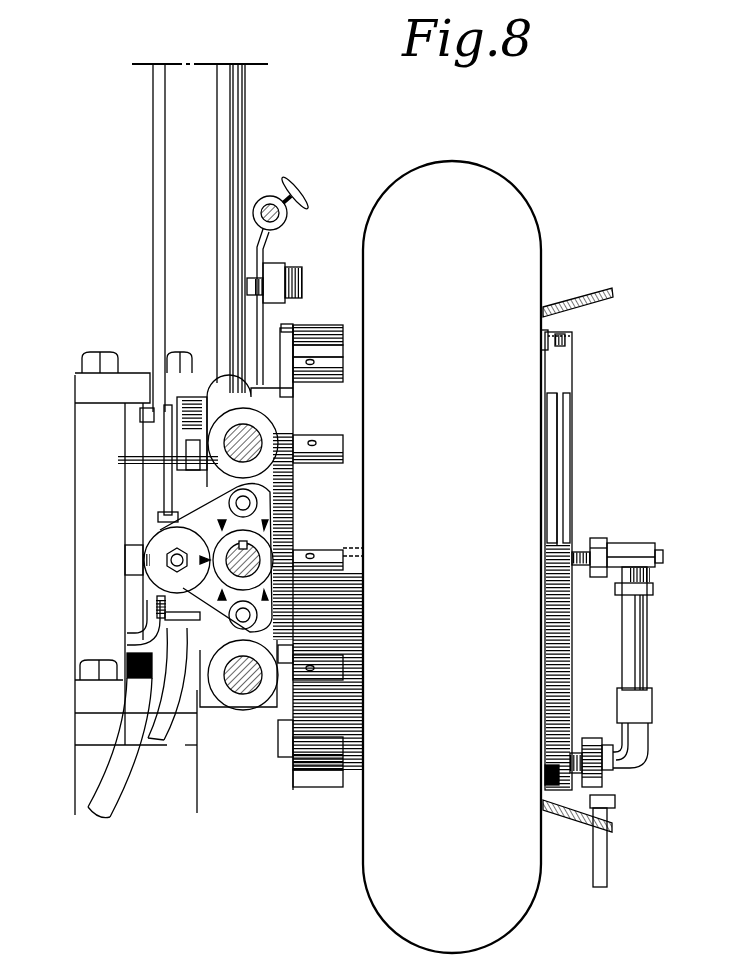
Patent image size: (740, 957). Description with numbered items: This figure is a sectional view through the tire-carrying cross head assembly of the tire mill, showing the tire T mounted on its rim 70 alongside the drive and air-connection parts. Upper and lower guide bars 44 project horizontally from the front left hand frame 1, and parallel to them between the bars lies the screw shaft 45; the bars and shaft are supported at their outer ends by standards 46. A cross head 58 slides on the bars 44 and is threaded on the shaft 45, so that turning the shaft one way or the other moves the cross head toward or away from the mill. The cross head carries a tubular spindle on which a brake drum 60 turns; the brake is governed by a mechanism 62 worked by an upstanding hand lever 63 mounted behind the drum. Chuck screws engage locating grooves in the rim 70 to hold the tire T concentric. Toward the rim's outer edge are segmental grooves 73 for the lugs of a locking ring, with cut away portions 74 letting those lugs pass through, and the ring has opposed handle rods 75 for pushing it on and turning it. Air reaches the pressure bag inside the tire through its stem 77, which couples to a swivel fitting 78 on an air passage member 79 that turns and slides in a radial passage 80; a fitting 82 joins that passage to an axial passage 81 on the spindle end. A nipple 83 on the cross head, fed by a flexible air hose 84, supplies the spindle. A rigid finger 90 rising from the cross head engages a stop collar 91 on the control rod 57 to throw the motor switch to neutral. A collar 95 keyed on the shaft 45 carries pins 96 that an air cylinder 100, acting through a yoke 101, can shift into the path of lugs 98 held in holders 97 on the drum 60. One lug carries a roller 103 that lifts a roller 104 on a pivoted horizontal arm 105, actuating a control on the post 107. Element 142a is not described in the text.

The tire T is at (518, 246).
The front left hand frame 1 is at (88, 728).
The guide bars 44 is at (258, 447).
The screw shaft 45 is at (258, 562).
The standards 46 is at (155, 489).
The control rod 57 is at (268, 205).
The cross head 58 is at (330, 601).
The brake drum 60 is at (370, 402).
The brake mechanism 62 is at (172, 460).
The hand lever 63 is at (158, 270).
The rim 70 is at (555, 376).
The segmental grooves 73 is at (556, 456).
The cut away portions 74 is at (563, 526).
The handle rods 75 is at (570, 300).
The air connecting stem 77 is at (573, 756).
The fitting 78 is at (615, 776).
The air passage member 79 is at (648, 750).
The radial passage 80 is at (640, 631).
The axial passage 81 is at (581, 568).
The fitting 82 is at (620, 548).
The nipple 83 is at (152, 616).
The flexible air hose 84 is at (112, 779).
The rigid finger 90 is at (252, 250).
The stop collar 91 is at (300, 197).
The collar 95 is at (332, 560).
The pins 96 is at (258, 521).
The holders 97 is at (336, 361).
The lugs 98 is at (290, 383).
The air cylinder 100 is at (160, 544).
The yoke 101 is at (178, 532).
The roller 103 is at (293, 327).
The roller 104 is at (300, 278).
The horizontal arm 105 is at (278, 268).
The post 107 is at (245, 118).
The hose 142a is at (156, 745).